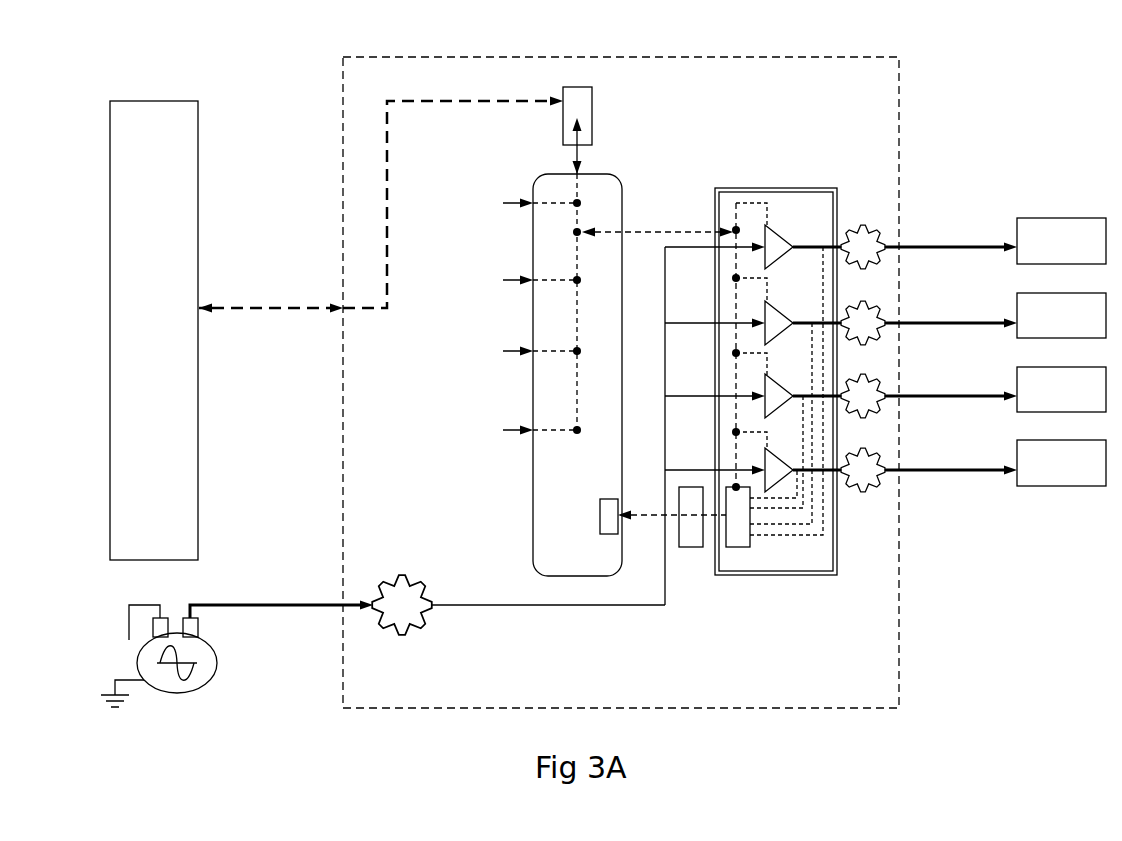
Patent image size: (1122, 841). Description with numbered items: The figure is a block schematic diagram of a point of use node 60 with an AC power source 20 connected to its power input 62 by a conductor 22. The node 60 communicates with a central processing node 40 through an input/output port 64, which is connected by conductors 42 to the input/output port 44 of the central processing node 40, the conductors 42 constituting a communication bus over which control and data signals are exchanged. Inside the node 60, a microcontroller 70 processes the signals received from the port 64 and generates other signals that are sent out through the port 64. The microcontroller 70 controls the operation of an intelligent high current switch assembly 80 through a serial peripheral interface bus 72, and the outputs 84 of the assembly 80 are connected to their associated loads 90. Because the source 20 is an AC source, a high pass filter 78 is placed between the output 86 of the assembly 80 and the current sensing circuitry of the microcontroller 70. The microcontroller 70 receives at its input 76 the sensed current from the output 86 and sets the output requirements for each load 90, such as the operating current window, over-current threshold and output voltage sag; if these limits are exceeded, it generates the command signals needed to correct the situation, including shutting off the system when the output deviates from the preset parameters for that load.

The power source 20 is at (178, 701).
The conductor 22 is at (310, 604).
The central processing node 40 is at (203, 170).
The conductors 42 is at (255, 308).
The input/output port 44 is at (199, 312).
The point of use node 60 is at (905, 636).
The power input 62 is at (387, 630).
The input/output port 64 is at (593, 100).
The microcontroller 70 is at (522, 526).
The serial peripheral interface (SPI) bus 72 is at (652, 232).
The input 76 is at (606, 522).
The high pass filter 78 is at (690, 547).
The intelligent high current switch assembly 80 is at (741, 547).
The outputs 84 is at (868, 227).
The output 86 is at (761, 588).
The loads 90 is at (1104, 284).